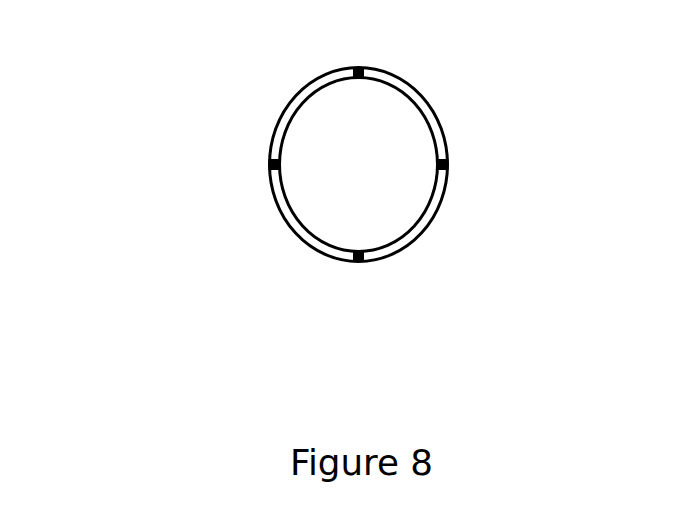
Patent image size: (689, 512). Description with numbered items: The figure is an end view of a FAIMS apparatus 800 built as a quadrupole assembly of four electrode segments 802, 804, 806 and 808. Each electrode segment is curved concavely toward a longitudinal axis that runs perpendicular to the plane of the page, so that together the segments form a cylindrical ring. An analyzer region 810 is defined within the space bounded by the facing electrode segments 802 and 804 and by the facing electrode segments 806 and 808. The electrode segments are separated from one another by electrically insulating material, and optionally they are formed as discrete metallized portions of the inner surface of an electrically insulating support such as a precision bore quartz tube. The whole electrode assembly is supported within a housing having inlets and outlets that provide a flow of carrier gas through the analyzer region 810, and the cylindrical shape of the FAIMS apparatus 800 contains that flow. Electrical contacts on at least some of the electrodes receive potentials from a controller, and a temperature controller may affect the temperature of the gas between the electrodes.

The FAIMS apparatus 800 is at (128, 160).
The electrode segment 802 is at (293, 98).
The electrode segment 804 is at (417, 235).
The electrode segment 806 is at (433, 108).
The electrode segment 808 is at (307, 247).
The analyzer region 810 is at (328, 162).